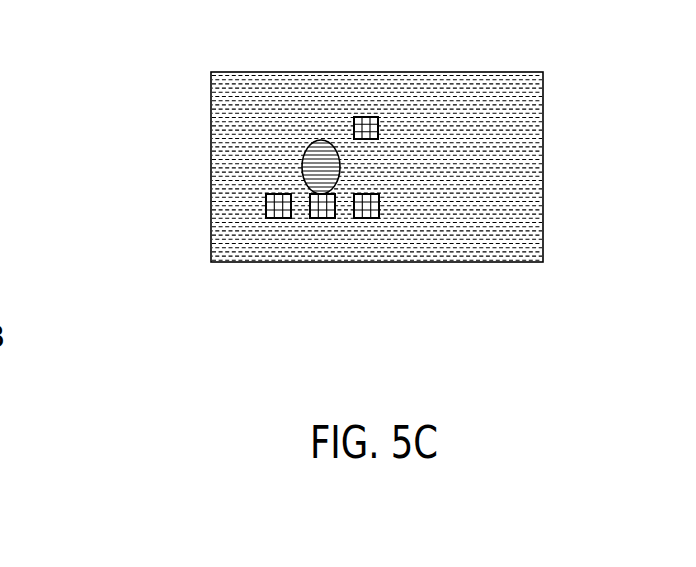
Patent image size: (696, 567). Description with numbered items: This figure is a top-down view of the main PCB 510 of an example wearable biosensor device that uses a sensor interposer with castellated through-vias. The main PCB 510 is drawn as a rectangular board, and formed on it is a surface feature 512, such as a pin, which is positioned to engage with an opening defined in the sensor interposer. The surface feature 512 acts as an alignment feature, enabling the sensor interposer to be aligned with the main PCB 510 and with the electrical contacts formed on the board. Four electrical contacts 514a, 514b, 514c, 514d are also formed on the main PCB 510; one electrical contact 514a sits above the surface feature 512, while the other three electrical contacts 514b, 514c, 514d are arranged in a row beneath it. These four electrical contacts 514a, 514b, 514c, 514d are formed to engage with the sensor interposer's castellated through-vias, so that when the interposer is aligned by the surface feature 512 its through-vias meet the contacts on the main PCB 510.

The main PCB 510 is at (507, 198).
The surface feature 512 is at (303, 172).
The electrical contact 514a is at (368, 117).
The electrical contact 514b is at (268, 217).
The electrical contact 514c is at (327, 218).
The electrical contact 514d is at (366, 216).